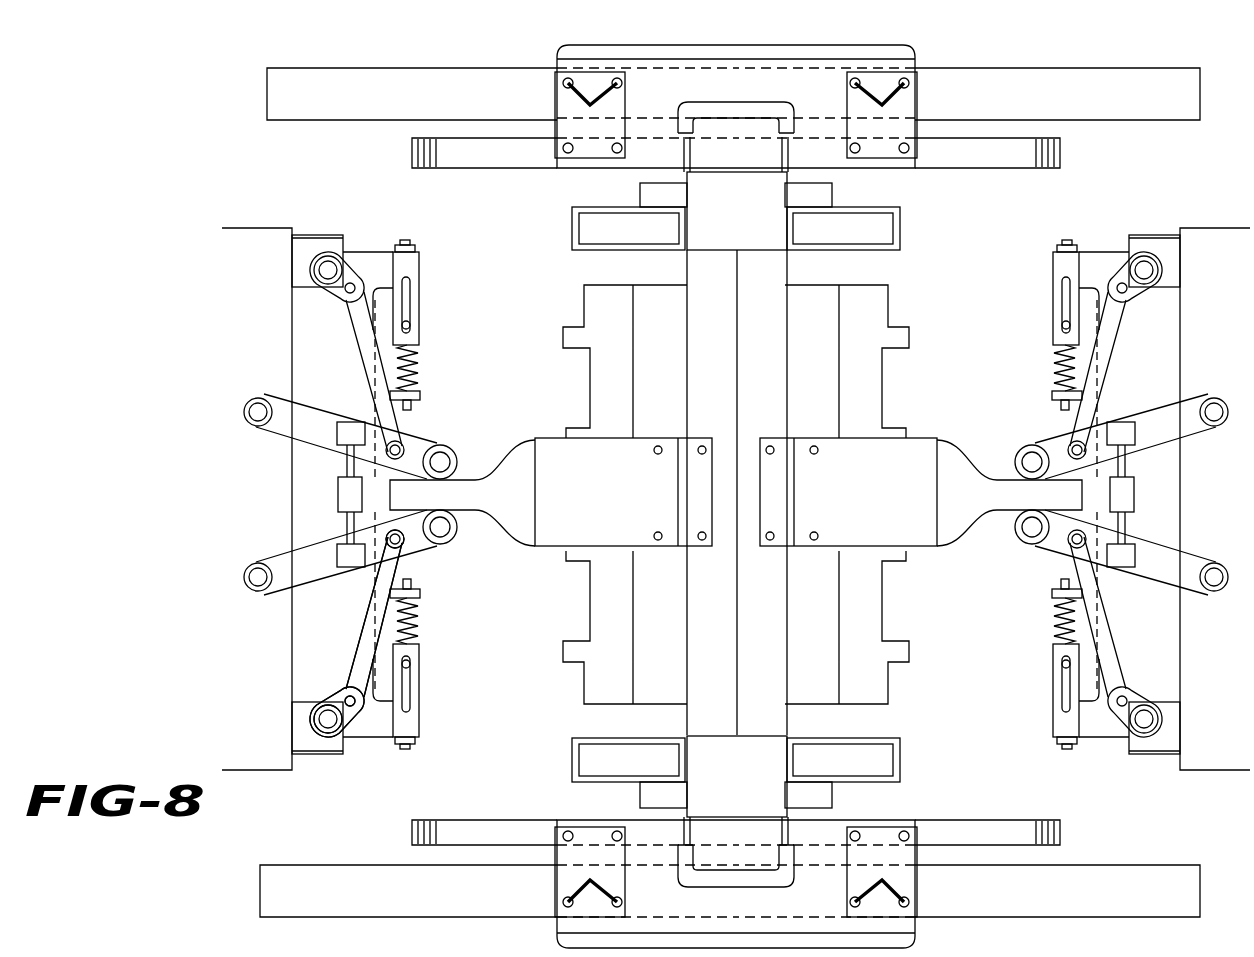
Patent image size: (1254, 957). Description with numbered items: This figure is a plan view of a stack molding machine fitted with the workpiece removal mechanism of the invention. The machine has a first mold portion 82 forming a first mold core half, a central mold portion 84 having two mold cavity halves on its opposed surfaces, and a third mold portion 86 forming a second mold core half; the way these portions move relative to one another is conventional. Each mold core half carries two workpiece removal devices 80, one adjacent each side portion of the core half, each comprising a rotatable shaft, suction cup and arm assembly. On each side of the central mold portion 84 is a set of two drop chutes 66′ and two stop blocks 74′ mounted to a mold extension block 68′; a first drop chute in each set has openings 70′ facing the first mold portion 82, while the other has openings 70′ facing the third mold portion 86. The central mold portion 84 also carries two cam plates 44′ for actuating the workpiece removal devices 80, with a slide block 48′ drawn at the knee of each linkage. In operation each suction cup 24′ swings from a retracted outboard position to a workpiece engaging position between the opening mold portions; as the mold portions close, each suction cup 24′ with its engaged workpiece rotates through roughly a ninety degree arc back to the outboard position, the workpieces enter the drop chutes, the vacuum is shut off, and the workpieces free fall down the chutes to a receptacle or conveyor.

The suction cup 24′ is at (393, 603).
The cam plate 44′ is at (736, 492).
The slide block 48′ is at (338, 497).
The drop chute 66′ is at (736, 494).
The mold extension block 68′ is at (737, 494).
The openings 70′ is at (572, 228).
The stop block 74′ is at (642, 192).
The workpiece removal device 80 is at (438, 253).
The first mold portion 82 is at (1215, 499).
The central mold portion 84 is at (737, 492).
The third mold portion 86 is at (257, 499).